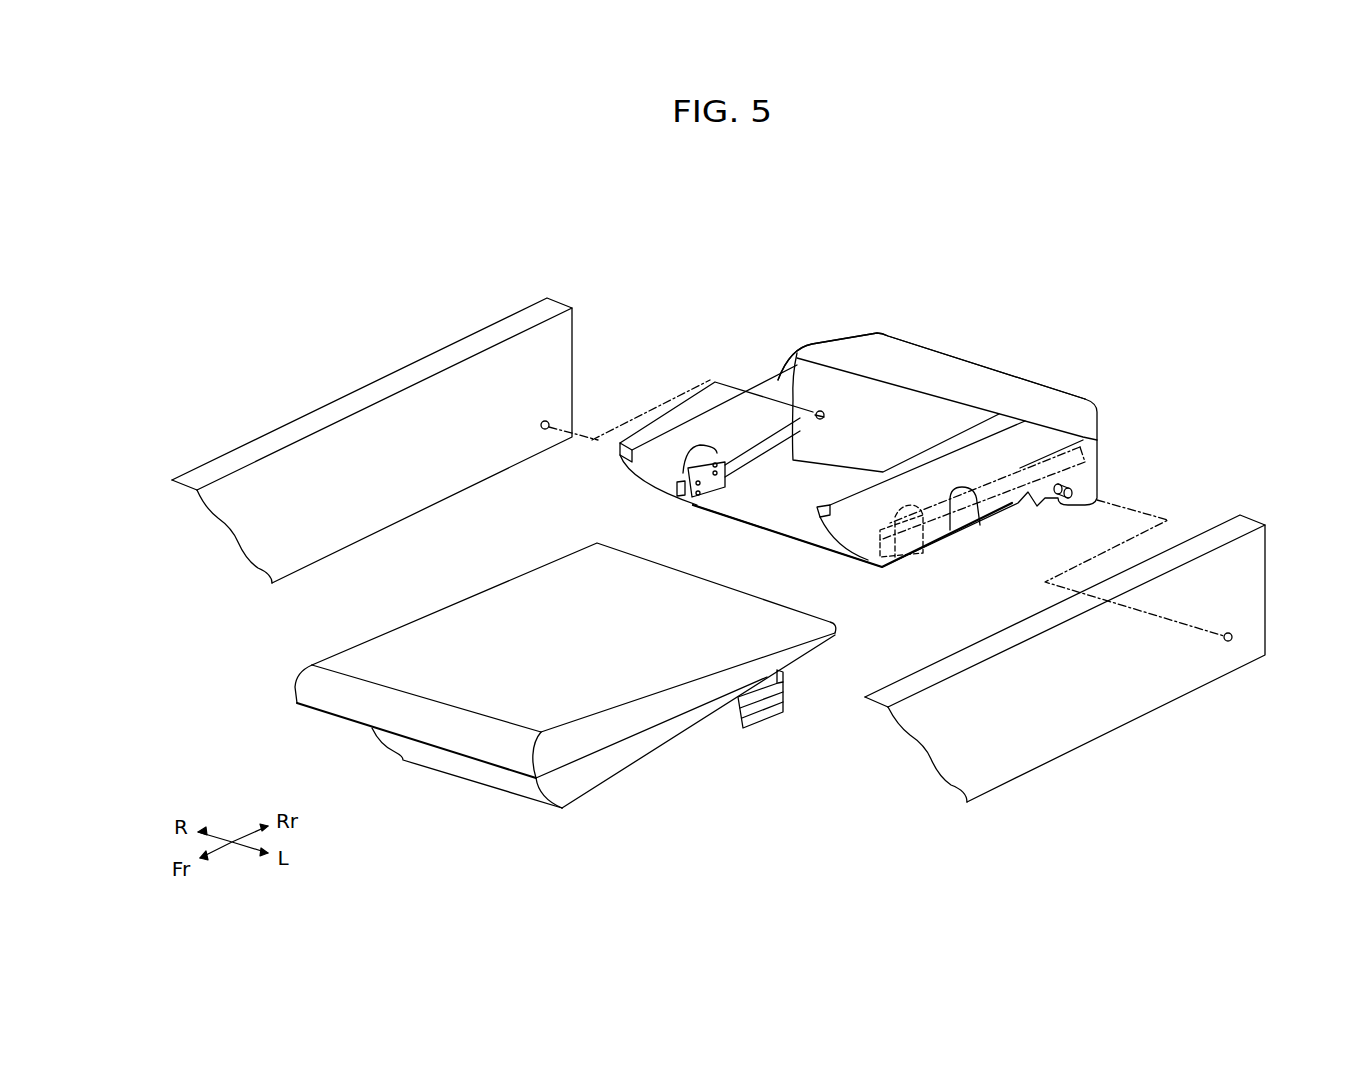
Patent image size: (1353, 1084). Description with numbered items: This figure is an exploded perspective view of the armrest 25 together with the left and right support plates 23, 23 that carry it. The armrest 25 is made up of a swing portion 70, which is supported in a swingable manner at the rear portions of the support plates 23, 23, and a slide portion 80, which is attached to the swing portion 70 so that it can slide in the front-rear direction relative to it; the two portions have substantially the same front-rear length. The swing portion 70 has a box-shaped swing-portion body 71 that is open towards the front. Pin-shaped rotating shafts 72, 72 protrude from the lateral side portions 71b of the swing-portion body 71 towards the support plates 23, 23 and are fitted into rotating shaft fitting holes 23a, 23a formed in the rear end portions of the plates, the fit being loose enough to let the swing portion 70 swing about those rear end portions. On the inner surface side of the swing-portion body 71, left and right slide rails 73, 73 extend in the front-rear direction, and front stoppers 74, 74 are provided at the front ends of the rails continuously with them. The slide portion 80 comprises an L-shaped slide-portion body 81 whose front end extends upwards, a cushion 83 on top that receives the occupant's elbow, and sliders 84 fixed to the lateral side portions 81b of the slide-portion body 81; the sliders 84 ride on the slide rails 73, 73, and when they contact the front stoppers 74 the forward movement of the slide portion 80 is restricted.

The armrest 25 is at (717, 293).
The support plate 23 is at (440, 363).
The rotating shaft fitting hole 23a is at (540, 423).
The swing portion 70 is at (957, 362).
The swing-portion body 71 is at (1020, 385).
The lateral side portion 71b is at (1040, 437).
The rotating shaft 72 is at (820, 410).
The slide rail 73 is at (759, 418).
The front stopper 74 is at (700, 452).
The slide portion 80 is at (468, 692).
The slide-portion body 81 is at (508, 772).
The lateral side portion 81b is at (652, 753).
The cushion 83 is at (555, 605).
The slider 84 is at (762, 727).